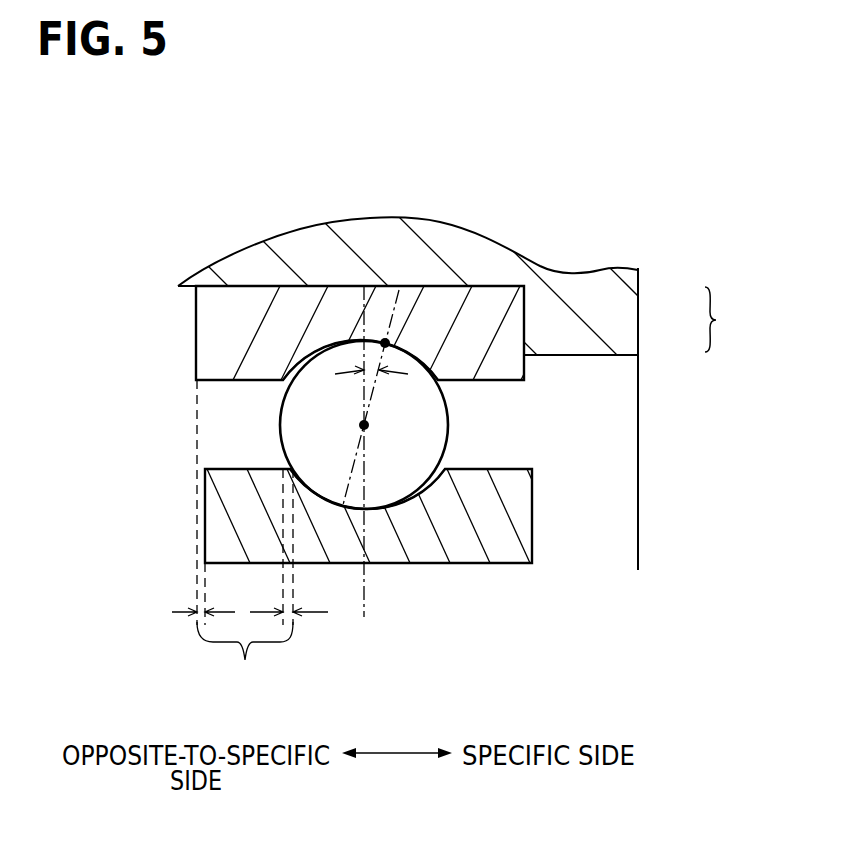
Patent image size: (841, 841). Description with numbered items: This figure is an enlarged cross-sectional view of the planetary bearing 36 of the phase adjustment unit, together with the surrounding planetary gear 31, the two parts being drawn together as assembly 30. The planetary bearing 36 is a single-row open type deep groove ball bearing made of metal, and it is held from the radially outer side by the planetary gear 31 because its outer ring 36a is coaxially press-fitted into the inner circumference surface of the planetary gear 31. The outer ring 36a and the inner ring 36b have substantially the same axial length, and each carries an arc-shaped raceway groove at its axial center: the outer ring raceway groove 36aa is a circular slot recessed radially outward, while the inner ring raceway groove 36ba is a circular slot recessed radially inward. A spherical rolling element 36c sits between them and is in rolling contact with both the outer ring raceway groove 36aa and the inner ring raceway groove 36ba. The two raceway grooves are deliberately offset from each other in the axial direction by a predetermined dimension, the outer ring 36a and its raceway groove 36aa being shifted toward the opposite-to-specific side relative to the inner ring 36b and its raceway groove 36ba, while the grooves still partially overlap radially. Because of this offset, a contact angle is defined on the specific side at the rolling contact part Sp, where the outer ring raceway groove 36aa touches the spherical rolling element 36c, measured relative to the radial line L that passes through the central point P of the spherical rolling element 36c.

The bearing unit 30 is at (728, 319).
The planetary gear 31 is at (638, 300).
The planetary bearing 36 is at (525, 350).
The outer ring 36a is at (218, 330).
The outer ring raceway groove 36aa is at (422, 378).
The inner ring 36b is at (227, 528).
The inner ring raceway groove 36ba is at (407, 490).
The spherical rolling element 36c is at (298, 421).
The rolling contact part Sp is at (385, 343).
The central point P is at (364, 425).
The radial line L is at (364, 600).